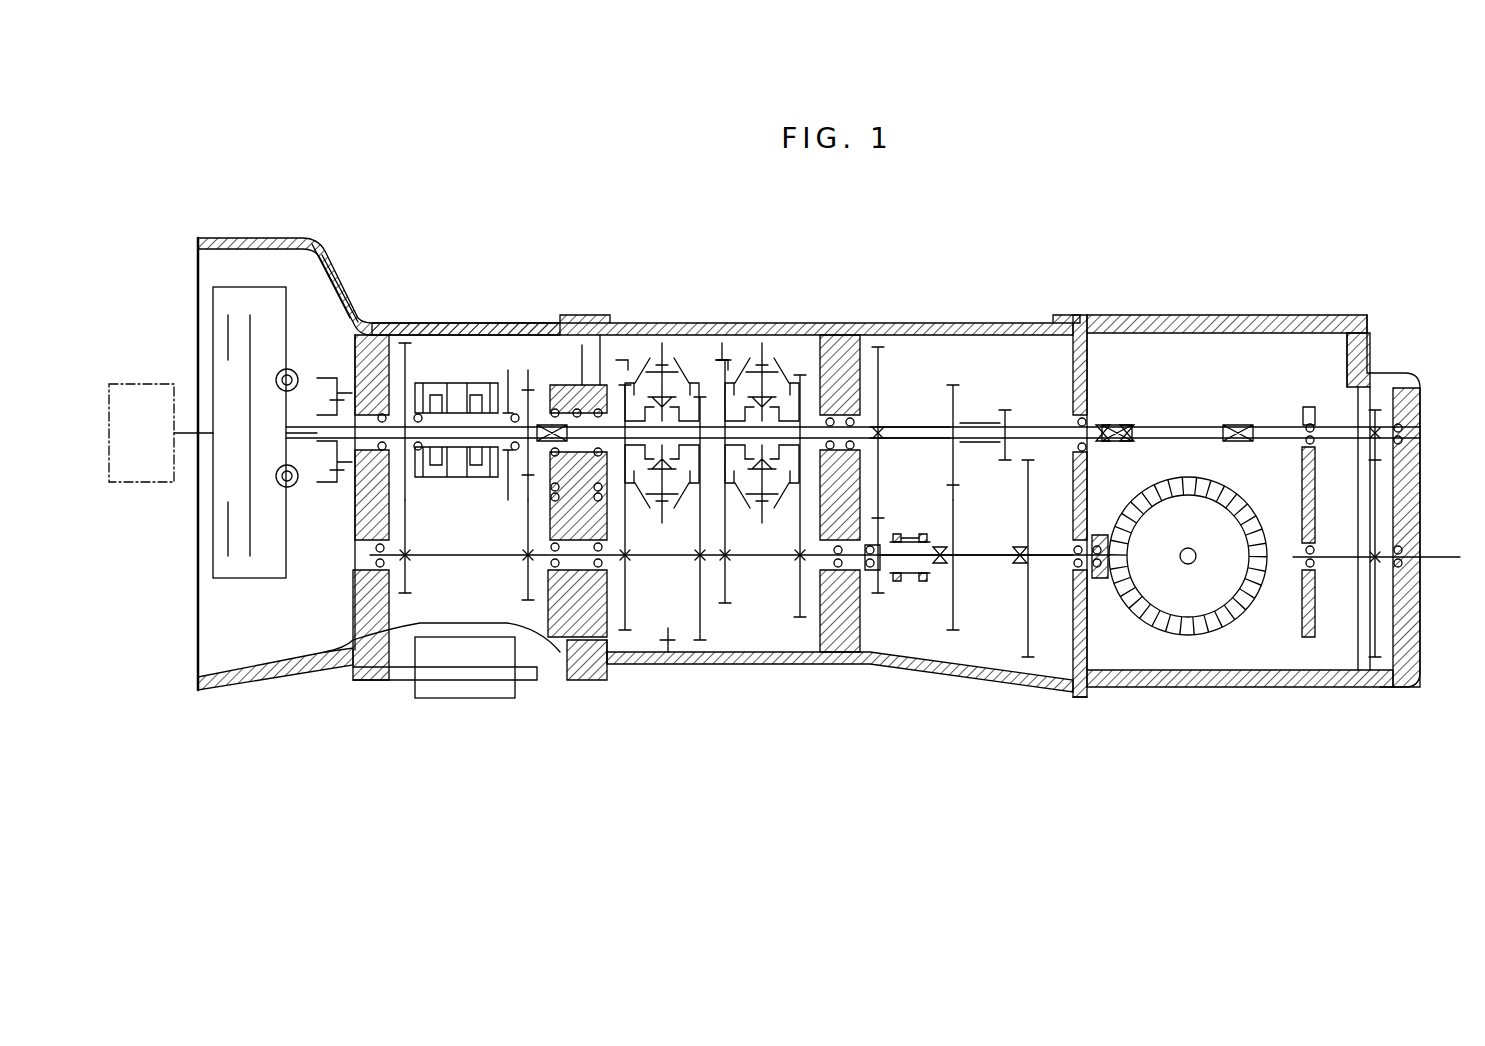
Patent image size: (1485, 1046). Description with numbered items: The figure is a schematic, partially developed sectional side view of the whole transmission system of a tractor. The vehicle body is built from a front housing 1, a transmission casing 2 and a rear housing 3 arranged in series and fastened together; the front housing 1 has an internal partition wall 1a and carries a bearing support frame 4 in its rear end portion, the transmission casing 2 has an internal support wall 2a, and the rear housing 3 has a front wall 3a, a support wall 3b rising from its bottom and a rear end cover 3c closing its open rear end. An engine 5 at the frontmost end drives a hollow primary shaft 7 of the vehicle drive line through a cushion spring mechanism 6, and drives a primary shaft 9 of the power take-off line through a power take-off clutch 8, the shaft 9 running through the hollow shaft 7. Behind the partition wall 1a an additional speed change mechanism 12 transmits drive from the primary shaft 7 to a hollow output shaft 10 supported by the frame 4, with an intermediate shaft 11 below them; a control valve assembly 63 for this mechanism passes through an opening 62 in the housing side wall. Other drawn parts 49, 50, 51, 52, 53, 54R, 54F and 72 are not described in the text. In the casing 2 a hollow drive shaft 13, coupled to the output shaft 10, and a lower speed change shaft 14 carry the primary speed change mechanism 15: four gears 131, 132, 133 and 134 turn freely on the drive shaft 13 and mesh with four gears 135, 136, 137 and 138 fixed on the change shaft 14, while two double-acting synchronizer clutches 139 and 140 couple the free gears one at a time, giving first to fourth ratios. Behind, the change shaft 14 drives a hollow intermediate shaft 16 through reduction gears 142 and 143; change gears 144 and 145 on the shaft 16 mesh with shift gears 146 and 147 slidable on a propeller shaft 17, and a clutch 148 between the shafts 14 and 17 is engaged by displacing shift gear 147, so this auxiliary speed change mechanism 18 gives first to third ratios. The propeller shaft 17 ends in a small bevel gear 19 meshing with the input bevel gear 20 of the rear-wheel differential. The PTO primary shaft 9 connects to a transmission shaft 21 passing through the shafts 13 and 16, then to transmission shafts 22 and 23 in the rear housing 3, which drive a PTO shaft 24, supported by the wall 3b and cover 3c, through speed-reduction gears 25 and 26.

The front housing 1 is at (448, 330).
The partition wall 1a is at (368, 605).
The transmission casing 2 is at (778, 662).
The support wall 2a is at (848, 600).
The rear housing 3 is at (1250, 690).
The front wall 3a is at (1082, 660).
The support wall 3b is at (1350, 340).
The rear end cover 3c is at (1405, 660).
The bearing support frame 4 is at (590, 640).
The engine 5 is at (130, 390).
The cushion spring mechanism 6 is at (308, 352).
The primary shaft 7 is at (508, 370).
The power take-off clutch 8 is at (238, 284).
The primary shaft 9 is at (297, 488).
The output shaft 10 is at (585, 342).
The intermediate shaft 11 is at (455, 558).
The additional speed change mechanism 12 is at (483, 368).
The drive shaft 13 is at (722, 340).
The speed change shaft 14 is at (770, 560).
The primary speed change mechanism 15 is at (673, 664).
The intermediate shaft 16 is at (970, 432).
The propeller shaft 17 is at (990, 558).
The auxiliary speed change mechanism 18 is at (967, 649).
The small bevel gear 19 is at (1112, 535).
The input bevel gear 20 is at (1190, 637).
The transmission shaft 21 is at (908, 430).
The transmission shaft 22 is at (1172, 426).
The transmission shaft 23 is at (1370, 430).
The PTO shaft 24 is at (1445, 560).
The speed-reduction gear 25 is at (1375, 373).
The speed-reduction gear 26 is at (1310, 640).
The gear 49 is at (405, 343).
The gear 50 is at (385, 592).
The gear 51 is at (538, 602).
The gear 52 is at (528, 368).
The bearing 53 is at (545, 490).
The reverse clutch 54R is at (425, 381).
The forward clutch 54F is at (480, 478).
The opening 62 is at (505, 682).
The control valve assembly 63 is at (462, 713).
The housing wall 72 is at (328, 318).
The gear 131 is at (695, 343).
The gear 132 is at (652, 345).
The gear 133 is at (825, 343).
The gear 134 is at (750, 343).
The gear 135 is at (700, 642).
The gear 136 is at (625, 632).
The gear 137 is at (800, 618).
The gear 138 is at (725, 605).
The synchronizer clutch 139 is at (667, 532).
The synchronizer clutch 140 is at (755, 523).
The gear 142 is at (880, 600).
The gear 143 is at (870, 337).
The change gear 144 is at (1007, 410).
The change gear 145 is at (958, 385).
The shift gear 146 is at (1028, 660).
The shift gear 147 is at (947, 620).
The clutch 148 is at (913, 526).